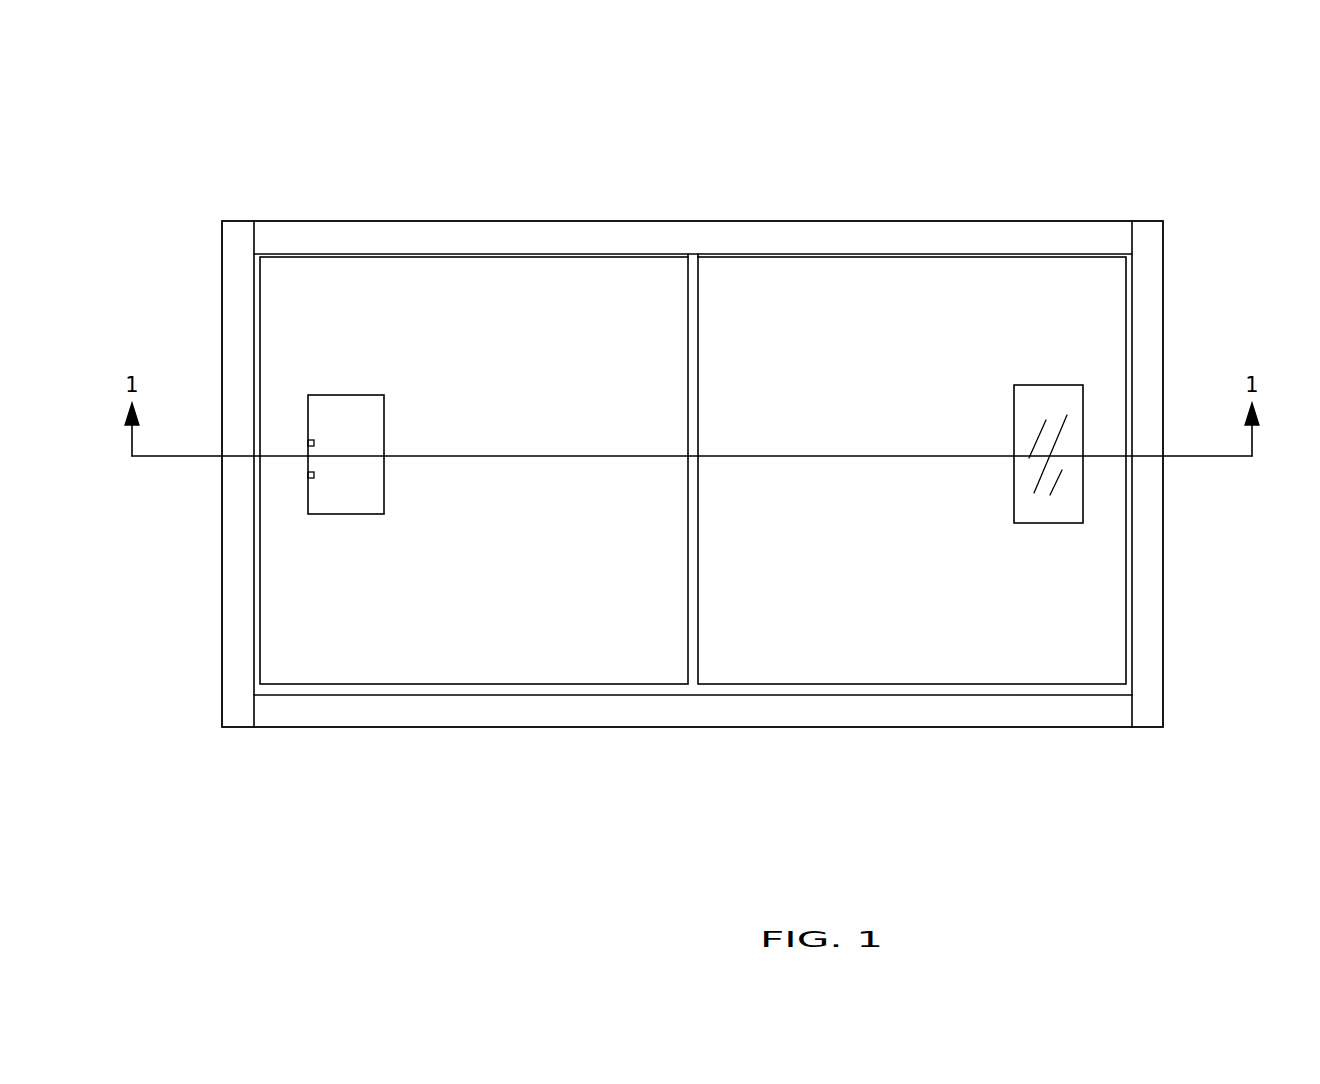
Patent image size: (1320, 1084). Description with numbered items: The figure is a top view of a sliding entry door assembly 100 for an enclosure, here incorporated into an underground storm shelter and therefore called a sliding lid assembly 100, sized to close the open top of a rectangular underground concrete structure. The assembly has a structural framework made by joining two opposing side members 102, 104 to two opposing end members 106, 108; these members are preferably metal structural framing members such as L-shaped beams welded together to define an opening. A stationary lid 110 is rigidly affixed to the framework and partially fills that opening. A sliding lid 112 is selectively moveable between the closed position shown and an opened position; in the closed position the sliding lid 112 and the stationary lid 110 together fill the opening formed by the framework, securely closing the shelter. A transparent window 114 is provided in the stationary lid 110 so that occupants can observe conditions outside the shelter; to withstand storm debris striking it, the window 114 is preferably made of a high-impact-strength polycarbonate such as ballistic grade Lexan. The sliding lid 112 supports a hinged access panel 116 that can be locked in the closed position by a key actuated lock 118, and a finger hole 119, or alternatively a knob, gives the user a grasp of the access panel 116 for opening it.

The sliding entry door assembly 100 is at (922, 140).
The side member 102 is at (619, 221).
The side member 104 is at (645, 727).
The end member 106 is at (222, 545).
The end member 108 is at (1163, 534).
The stationary lid 110 is at (909, 627).
The sliding lid 112 is at (358, 655).
The transparent window 114 is at (1035, 510).
The hinged access panel 116 is at (366, 420).
The key actuated lock 118 is at (311, 478).
The finger hole 119 is at (311, 440).